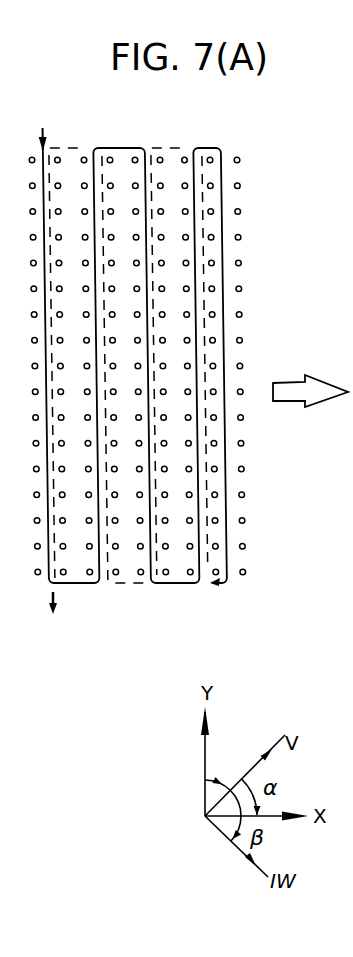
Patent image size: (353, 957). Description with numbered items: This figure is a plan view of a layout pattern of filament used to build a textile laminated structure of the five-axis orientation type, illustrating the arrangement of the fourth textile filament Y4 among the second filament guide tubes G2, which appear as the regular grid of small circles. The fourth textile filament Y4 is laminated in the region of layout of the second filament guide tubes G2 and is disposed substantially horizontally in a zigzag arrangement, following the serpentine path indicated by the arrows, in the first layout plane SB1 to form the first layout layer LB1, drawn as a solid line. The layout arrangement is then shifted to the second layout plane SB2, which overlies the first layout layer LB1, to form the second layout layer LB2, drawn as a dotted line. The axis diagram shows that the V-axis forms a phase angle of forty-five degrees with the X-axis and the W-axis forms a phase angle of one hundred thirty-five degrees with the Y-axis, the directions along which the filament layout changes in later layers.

The fourth textile filament Y4 is at (45, 171).
The second filament guide tubes G2 is at (184, 156).
The first layout layer LB1 is at (112, 645).
The second layout layer LB2 is at (200, 645).
The first layout plane SB1 is at (100, 413).
The second layout plane SB2 is at (178, 413).